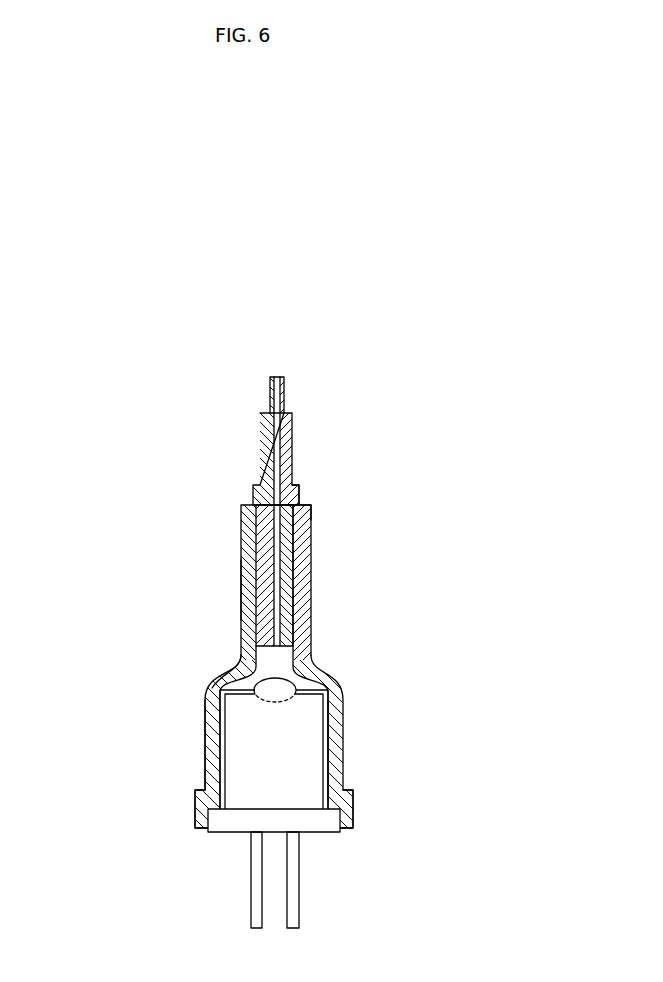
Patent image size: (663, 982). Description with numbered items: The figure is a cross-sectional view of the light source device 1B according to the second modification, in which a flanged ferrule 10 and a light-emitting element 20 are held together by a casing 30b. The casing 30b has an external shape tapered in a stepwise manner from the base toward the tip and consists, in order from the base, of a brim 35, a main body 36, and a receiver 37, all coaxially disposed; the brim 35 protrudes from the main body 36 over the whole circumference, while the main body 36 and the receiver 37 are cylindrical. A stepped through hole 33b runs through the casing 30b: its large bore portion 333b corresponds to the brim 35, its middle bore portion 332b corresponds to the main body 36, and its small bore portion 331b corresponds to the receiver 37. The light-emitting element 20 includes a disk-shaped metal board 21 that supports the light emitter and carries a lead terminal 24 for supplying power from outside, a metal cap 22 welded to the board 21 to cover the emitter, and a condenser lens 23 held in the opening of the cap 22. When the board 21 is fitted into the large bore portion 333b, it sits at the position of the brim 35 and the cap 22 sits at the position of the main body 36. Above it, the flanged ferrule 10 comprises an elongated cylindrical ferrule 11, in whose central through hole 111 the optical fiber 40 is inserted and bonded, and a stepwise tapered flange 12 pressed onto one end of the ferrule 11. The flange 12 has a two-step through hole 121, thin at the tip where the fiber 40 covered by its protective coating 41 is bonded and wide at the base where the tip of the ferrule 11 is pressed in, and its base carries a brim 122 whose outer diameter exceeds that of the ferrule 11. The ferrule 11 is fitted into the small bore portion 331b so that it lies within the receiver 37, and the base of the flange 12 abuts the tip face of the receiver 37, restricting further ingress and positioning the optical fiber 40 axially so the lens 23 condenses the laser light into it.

The light source device 1B is at (363, 348).
The flanged ferrule 10 is at (148, 413).
The ferrule 11 is at (243, 509).
The flange 12 is at (260, 440).
The through hole 121 is at (300, 503).
The brim 122 is at (311, 517).
The light-emitting element 20 is at (304, 687).
The board 21 is at (313, 822).
The cap 22 is at (308, 762).
The lens 23 is at (298, 696).
The lead terminal 24 is at (293, 887).
The casing 30b is at (205, 616).
The through hole 33b is at (88, 662).
The small bore portion 331b is at (236, 667).
The middle bore portion 332b is at (207, 717).
The large bore portion 333b is at (205, 770).
The brim 35 is at (197, 808).
The main body 36 is at (337, 776).
The receiver 37 is at (243, 592).
The optical fiber 40 is at (305, 568).
The coating 41 is at (285, 386).
The through hole 111 is at (307, 588).